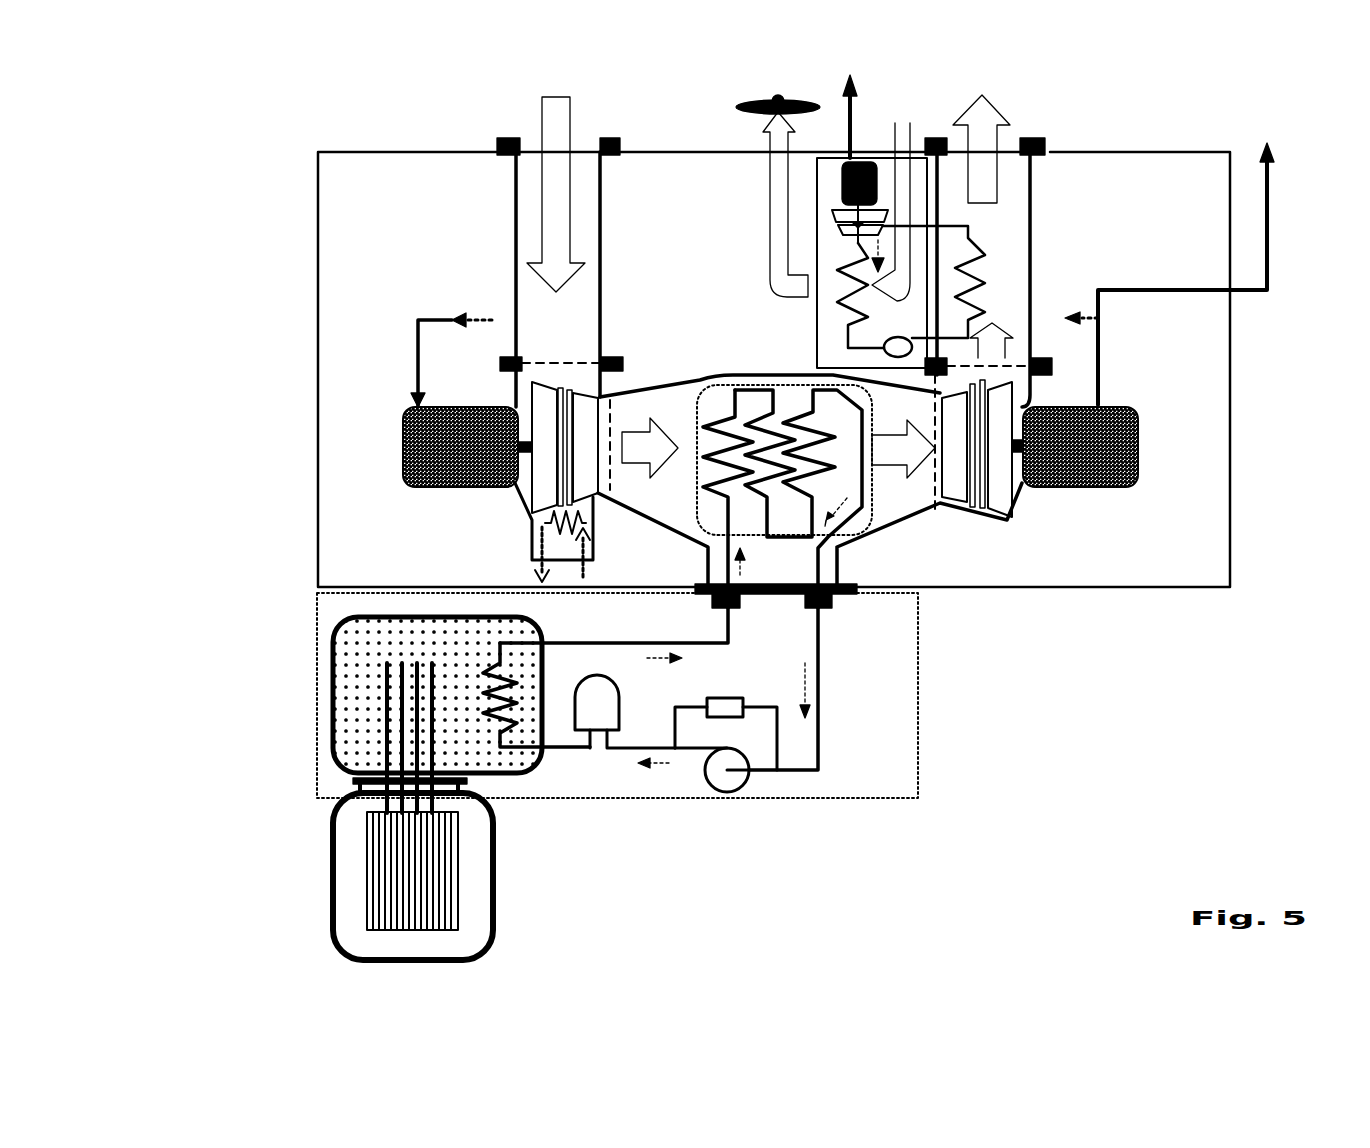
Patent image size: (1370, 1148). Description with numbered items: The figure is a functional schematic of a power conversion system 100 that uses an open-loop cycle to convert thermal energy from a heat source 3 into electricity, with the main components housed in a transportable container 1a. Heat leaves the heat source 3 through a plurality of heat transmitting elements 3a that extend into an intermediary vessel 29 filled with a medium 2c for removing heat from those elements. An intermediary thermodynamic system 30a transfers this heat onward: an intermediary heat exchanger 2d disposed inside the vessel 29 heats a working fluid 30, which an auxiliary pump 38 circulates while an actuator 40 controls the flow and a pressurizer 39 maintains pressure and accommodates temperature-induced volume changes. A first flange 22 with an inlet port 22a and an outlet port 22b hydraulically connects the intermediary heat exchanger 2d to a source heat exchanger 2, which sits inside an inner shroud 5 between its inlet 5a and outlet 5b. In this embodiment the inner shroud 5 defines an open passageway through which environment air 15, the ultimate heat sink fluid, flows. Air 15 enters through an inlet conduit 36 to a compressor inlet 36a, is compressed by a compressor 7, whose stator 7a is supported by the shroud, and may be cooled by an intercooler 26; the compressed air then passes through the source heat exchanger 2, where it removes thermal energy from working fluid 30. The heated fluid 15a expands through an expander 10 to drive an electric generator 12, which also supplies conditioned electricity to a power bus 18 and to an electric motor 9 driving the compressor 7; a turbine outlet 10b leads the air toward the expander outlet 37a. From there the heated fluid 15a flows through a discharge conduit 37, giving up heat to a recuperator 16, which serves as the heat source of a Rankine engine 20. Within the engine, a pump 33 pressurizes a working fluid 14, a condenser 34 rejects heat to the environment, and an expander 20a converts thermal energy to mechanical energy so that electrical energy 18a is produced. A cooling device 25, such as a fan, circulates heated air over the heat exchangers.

The power conversion system 100 is at (300, 258).
The transportable container 1a is at (318, 367).
The source heat exchanger 2 is at (865, 492).
The medium 2c is at (472, 743).
The intermediary heat exchanger 2d is at (502, 710).
The heat source 3 is at (408, 863).
The heat transmitting elements 3a is at (388, 692).
The inner shroud 5 is at (874, 522).
The inlet 5a is at (614, 418).
The outlet 5b is at (943, 497).
The compressor 7 is at (546, 492).
The stator 7a is at (553, 415).
The electric motor 9 is at (425, 457).
The expander 10 is at (1003, 485).
The turbine outlet 10b is at (978, 493).
The electric generator 12 is at (1100, 445).
The working fluid 14 is at (878, 257).
The environment air 15 is at (565, 112).
The heated fluid 15a is at (778, 142).
The recuperator 16 is at (972, 272).
The power bus 18 is at (1176, 258).
The electrical energy 18a is at (838, 101).
The Rankine engine 20 is at (820, 338).
The expander 20a is at (845, 218).
The first flange 22 is at (855, 597).
The inlet port 22a is at (824, 605).
The outlet port 22b is at (713, 605).
The cooling device 25 is at (775, 97).
The intercooler 26 is at (548, 530).
The intermediary vessel 29 is at (335, 668).
The working fluid 30 is at (820, 701).
The intermediary thermodynamic system 30a is at (820, 798).
The pump 33 is at (893, 347).
The condenser 34 is at (855, 288).
The inlet conduit 36 is at (516, 212).
The compressor inlet 36a is at (575, 362).
The discharge conduit 37 is at (1030, 277).
The expander outlet 37a is at (1050, 365).
The auxiliary pump 38 is at (730, 790).
The pressurizer 39 is at (602, 712).
The actuator 40 is at (725, 707).